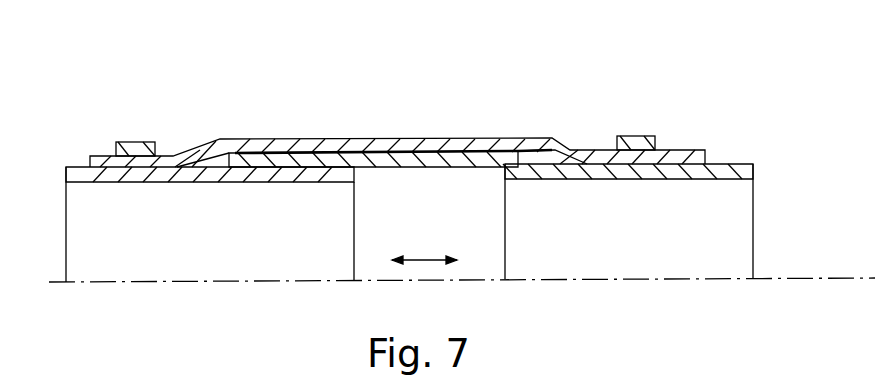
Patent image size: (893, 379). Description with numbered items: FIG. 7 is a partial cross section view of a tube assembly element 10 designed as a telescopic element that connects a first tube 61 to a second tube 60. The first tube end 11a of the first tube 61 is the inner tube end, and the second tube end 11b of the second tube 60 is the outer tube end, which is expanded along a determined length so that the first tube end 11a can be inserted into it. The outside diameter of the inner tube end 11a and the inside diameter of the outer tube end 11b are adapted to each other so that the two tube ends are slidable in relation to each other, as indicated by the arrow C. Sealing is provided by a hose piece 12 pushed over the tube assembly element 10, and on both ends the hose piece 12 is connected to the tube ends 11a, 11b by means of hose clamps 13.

The tube assembly element 10 is at (693, 72).
The first tube end 11a is at (243, 175).
The second tube end 11b is at (428, 137).
The hose piece 12 is at (323, 139).
The hose clamps 13 is at (137, 142).
The second tube 60 is at (598, 262).
The first tube 61 is at (212, 268).
The arrow C is at (424, 245).